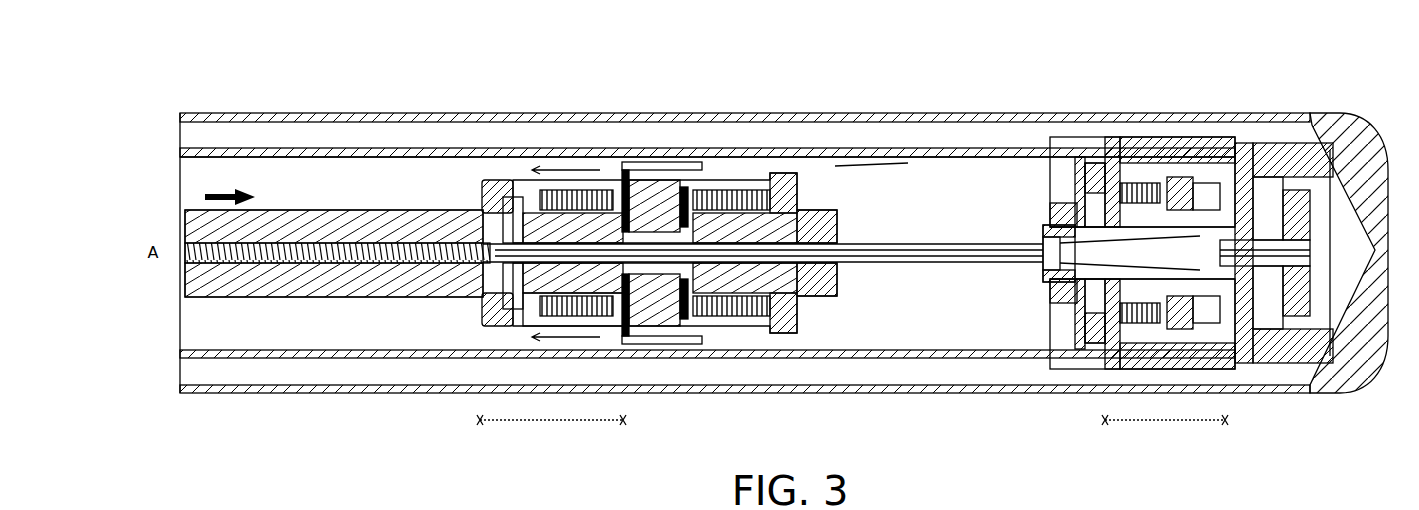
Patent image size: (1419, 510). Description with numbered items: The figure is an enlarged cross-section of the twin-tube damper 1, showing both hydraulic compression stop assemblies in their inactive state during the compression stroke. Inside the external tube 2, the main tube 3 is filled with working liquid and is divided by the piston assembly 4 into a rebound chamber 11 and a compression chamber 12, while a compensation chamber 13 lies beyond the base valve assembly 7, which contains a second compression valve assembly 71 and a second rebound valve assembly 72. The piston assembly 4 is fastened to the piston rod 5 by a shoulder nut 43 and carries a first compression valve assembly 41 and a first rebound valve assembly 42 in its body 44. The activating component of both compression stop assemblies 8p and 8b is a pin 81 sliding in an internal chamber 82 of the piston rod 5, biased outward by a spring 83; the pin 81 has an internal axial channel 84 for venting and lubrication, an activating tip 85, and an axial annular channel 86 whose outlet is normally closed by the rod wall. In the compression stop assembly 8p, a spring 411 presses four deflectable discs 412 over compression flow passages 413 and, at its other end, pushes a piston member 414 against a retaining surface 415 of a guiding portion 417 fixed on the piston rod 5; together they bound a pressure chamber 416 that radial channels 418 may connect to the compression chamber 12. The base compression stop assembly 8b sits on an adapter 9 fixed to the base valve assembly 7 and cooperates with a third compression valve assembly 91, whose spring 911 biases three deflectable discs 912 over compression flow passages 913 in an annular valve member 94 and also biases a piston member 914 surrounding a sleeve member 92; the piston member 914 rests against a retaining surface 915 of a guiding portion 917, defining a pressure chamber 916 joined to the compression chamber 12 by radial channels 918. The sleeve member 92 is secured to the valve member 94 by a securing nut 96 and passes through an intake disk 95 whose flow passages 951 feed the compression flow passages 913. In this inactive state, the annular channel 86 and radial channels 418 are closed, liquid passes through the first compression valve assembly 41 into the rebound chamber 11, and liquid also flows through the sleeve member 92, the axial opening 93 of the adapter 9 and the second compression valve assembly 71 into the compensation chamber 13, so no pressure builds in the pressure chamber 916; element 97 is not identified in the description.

The twin-tube damper 1 is at (237, 110).
The rebound chamber 11 is at (410, 121).
The compression chamber 12 is at (944, 300).
The compensation chamber 13 is at (1013, 358).
The external tube 2 is at (303, 228).
The main tube 3 is at (283, 157).
The piston rod 5 is at (326, 228).
The internal chamber 82 is at (279, 243).
The spring 83 is at (371, 208).
The pin 81 is at (882, 262).
The piston assembly 4 is at (650, 170).
The first compression valve assembly 41 is at (614, 178).
The spring 411 is at (586, 180).
The deflectable discs 412 is at (626, 336).
The compression flow passages 413 is at (665, 330).
The piston member 414 is at (546, 190).
The retaining surface 415 is at (560, 314).
The pressure chamber 416 is at (530, 300).
The guiding portion 417 is at (503, 297).
The radial channels 418 is at (494, 180).
The first rebound valve assembly 42 is at (745, 335).
The shoulder nut 43 is at (767, 180).
The body of the piston assembly 44 is at (692, 188).
The internal axial channel 84 is at (818, 212).
The activating tip 85 is at (1033, 241).
The axial annular channel 86 is at (734, 170).
The adapter 9 is at (1094, 358).
The third compression valve assembly 91 is at (1110, 137).
The spring 911 is at (1126, 160).
The deflectable discs 912 is at (1090, 157).
The compression flow passages 913 is at (1079, 165).
The piston member 914 is at (1160, 137).
The retaining surface 915 is at (1237, 365).
The pressure chamber 916 is at (1183, 163).
The guiding portion 917 is at (1243, 143).
The radial channels 918 is at (1218, 165).
The sleeve member 92 is at (1063, 230).
The axial opening 93 is at (1258, 145).
The annular valve member 94 is at (1080, 360).
The intake disk 95 is at (1093, 175).
The flow passages 951 is at (1080, 190).
The securing nut 96 is at (1070, 205).
The lower insert 97 is at (1268, 360).
The base valve assembly 7 is at (1300, 142).
The second compression valve assembly 71 is at (1307, 137).
The second rebound valve assembly 72 is at (1312, 377).
The compression stop assembly 8p is at (551, 432).
The base compression stop assembly 8b is at (1165, 432).